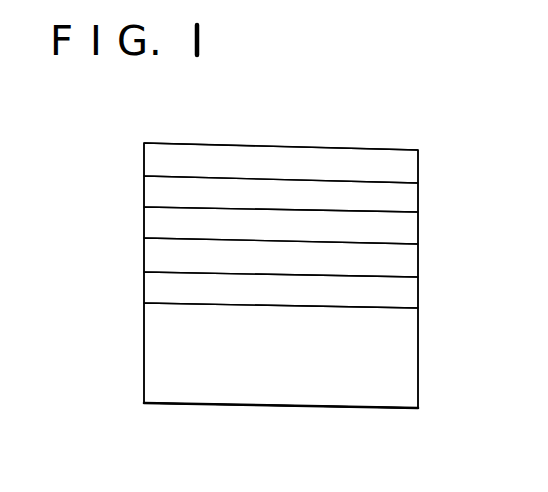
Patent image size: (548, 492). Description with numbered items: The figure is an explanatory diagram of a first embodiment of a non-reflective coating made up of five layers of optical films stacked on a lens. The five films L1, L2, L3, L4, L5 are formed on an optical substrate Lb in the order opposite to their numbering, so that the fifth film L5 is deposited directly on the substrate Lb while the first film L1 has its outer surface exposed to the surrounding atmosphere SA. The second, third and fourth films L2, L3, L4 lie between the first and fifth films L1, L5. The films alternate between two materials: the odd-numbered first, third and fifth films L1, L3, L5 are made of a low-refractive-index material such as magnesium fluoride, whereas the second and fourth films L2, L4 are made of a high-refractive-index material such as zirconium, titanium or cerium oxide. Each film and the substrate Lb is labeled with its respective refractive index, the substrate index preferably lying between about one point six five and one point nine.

The surrounding atmosphere SA is at (281, 252).
The first film L1 is at (407, 165).
The second film L2 is at (407, 193).
The third film L3 is at (407, 224).
The fourth film L4 is at (407, 258).
The fifth film L5 is at (407, 293).
The optical substrate Lb is at (348, 393).